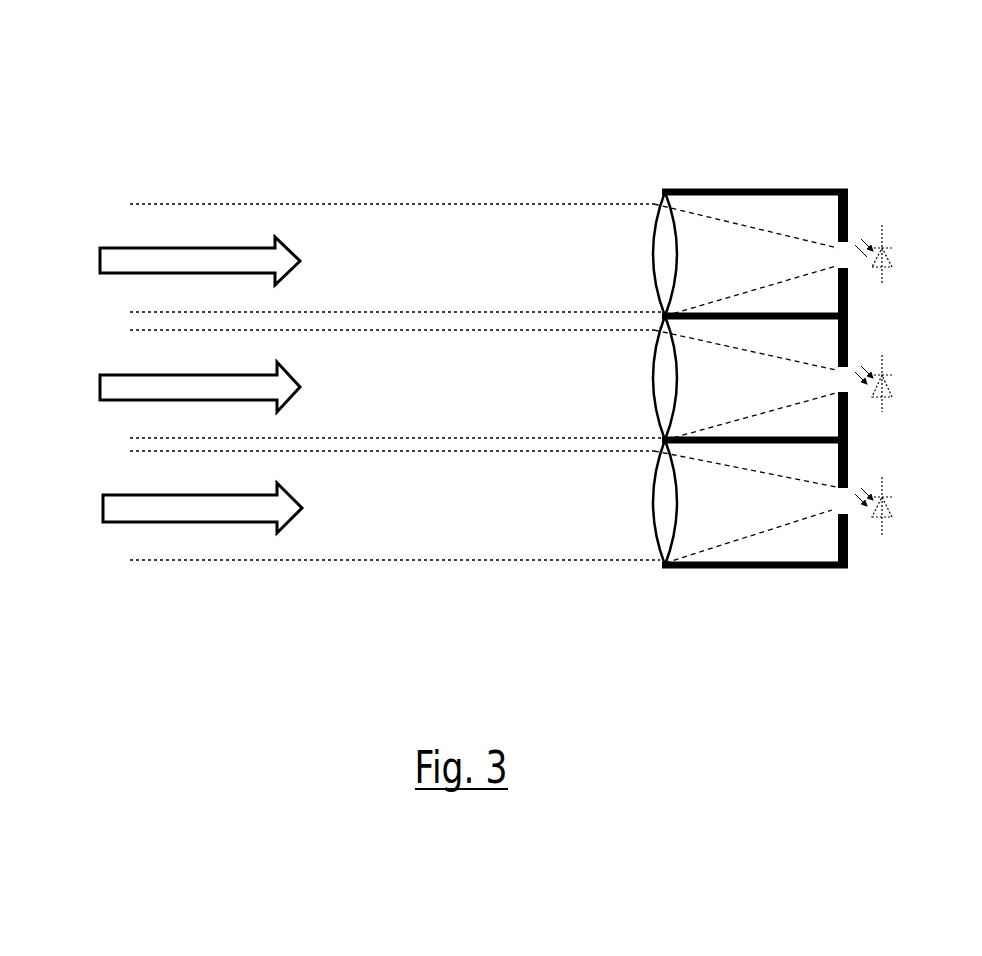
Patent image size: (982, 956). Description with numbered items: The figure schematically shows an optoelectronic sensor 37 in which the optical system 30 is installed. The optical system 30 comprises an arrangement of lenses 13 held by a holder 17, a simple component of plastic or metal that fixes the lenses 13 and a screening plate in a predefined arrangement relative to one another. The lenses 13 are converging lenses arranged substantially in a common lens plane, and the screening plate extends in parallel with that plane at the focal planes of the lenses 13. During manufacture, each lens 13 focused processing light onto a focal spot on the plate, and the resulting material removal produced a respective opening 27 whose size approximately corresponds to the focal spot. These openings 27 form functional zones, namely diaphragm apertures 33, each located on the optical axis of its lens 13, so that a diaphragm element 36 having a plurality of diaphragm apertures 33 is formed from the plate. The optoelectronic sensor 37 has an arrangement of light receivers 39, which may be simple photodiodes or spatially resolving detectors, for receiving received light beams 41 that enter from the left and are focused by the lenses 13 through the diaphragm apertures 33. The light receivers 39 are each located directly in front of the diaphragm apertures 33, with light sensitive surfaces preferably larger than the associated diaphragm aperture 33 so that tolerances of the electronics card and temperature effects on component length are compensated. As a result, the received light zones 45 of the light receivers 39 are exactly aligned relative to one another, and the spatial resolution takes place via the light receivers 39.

The lens 13 is at (663, 518).
The holder 17 is at (740, 570).
The opening 27 is at (828, 258).
The optical system 30 is at (781, 365).
The diaphragm aperture 33 is at (874, 364).
The diaphragm element 36 is at (848, 548).
The optoelectronic sensor 37 is at (366, 158).
The light receiver 39 is at (890, 232).
The received light beam 41 is at (163, 253).
The received light zone 45 is at (396, 362).